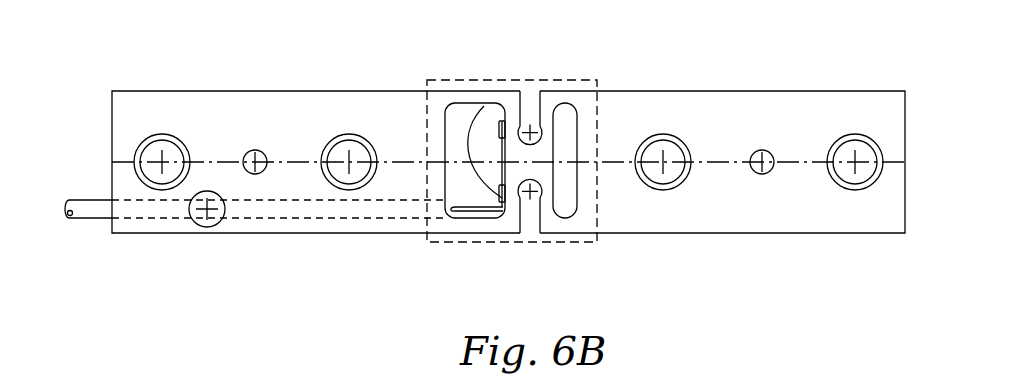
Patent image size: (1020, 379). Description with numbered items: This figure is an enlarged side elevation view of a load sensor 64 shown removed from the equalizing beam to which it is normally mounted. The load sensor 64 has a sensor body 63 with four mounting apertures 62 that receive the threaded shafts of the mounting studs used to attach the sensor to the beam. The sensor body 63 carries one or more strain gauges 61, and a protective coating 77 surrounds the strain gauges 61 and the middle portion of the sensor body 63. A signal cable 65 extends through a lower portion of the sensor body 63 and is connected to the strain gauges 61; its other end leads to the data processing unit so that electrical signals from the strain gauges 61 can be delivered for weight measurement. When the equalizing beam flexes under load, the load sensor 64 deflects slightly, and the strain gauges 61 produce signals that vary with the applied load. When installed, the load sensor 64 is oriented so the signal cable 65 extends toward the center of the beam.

The strain gauges 61 is at (500, 127).
The mounting apertures 62 is at (342, 155).
The sensor body 63 is at (680, 108).
The load sensor 64 is at (780, 57).
The signal cable 65 is at (88, 208).
The protective coating 77 is at (543, 80).